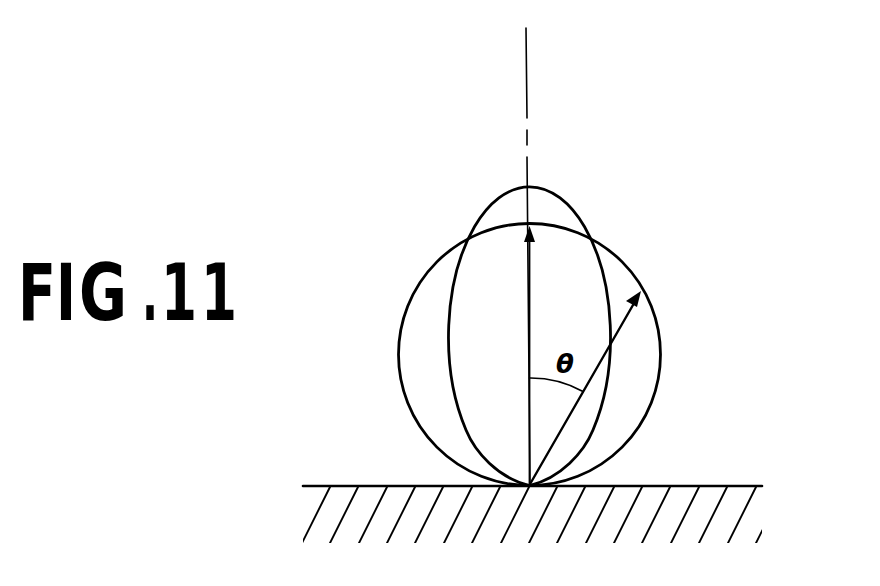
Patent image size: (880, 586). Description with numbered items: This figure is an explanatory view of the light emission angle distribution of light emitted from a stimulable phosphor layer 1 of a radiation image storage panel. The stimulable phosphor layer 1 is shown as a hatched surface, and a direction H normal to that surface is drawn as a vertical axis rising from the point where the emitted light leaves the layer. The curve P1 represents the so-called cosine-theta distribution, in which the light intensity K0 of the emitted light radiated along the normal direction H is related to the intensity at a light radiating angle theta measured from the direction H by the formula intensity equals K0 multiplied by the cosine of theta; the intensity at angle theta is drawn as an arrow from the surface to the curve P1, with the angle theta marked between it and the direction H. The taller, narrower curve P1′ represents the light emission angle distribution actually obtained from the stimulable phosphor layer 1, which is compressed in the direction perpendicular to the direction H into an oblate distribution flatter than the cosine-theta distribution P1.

The stimulable phosphor layer 1 is at (688, 492).
The direction normal to the surface of the stimulable phosphor layer H is at (527, 63).
The cos θ distribution P1 is at (672, 380).
The light emission angle distribution of the emitted light P1′ is at (482, 206).
The light intensity of the emitted light in the normal direction K0 is at (530, 288).